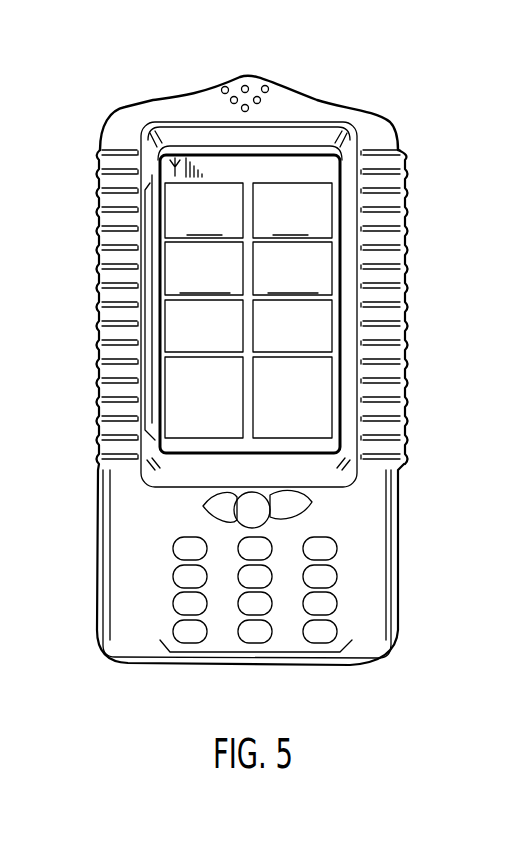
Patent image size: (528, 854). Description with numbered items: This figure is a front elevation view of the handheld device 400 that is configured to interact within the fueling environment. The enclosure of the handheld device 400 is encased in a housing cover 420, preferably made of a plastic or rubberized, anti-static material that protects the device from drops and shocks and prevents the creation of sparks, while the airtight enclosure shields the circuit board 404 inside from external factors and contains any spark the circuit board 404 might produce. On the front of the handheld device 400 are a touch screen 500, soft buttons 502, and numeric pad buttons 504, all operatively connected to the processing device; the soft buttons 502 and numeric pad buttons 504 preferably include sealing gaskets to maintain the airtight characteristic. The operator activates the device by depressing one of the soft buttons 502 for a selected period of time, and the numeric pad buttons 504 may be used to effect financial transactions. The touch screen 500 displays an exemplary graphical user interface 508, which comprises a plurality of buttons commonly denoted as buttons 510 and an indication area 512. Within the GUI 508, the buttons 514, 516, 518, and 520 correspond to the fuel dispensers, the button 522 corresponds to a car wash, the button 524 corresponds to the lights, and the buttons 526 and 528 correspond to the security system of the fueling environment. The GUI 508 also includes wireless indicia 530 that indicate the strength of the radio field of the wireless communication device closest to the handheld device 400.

The handheld device 400 is at (431, 214).
The circuit board 404 is at (180, 472).
The housing cover 420 is at (383, 271).
The touch screen 500 is at (337, 203).
The soft buttons 502 is at (318, 492).
The numeric pad buttons 504 is at (263, 652).
The graphical user interface 508 is at (233, 226).
The buttons 510 is at (143, 308).
The indication area 512 is at (252, 134).
The fuel dispenser button 514 is at (240, 203).
The fuel dispenser button 516 is at (362, 197).
The fuel dispenser button 518 is at (180, 283).
The fuel dispenser button 520 is at (320, 280).
The car wash button 522 is at (180, 340).
The lights button 524 is at (295, 333).
The security system button 526 is at (190, 423).
The security system button 528 is at (303, 425).
The wireless indicia 530 is at (208, 167).